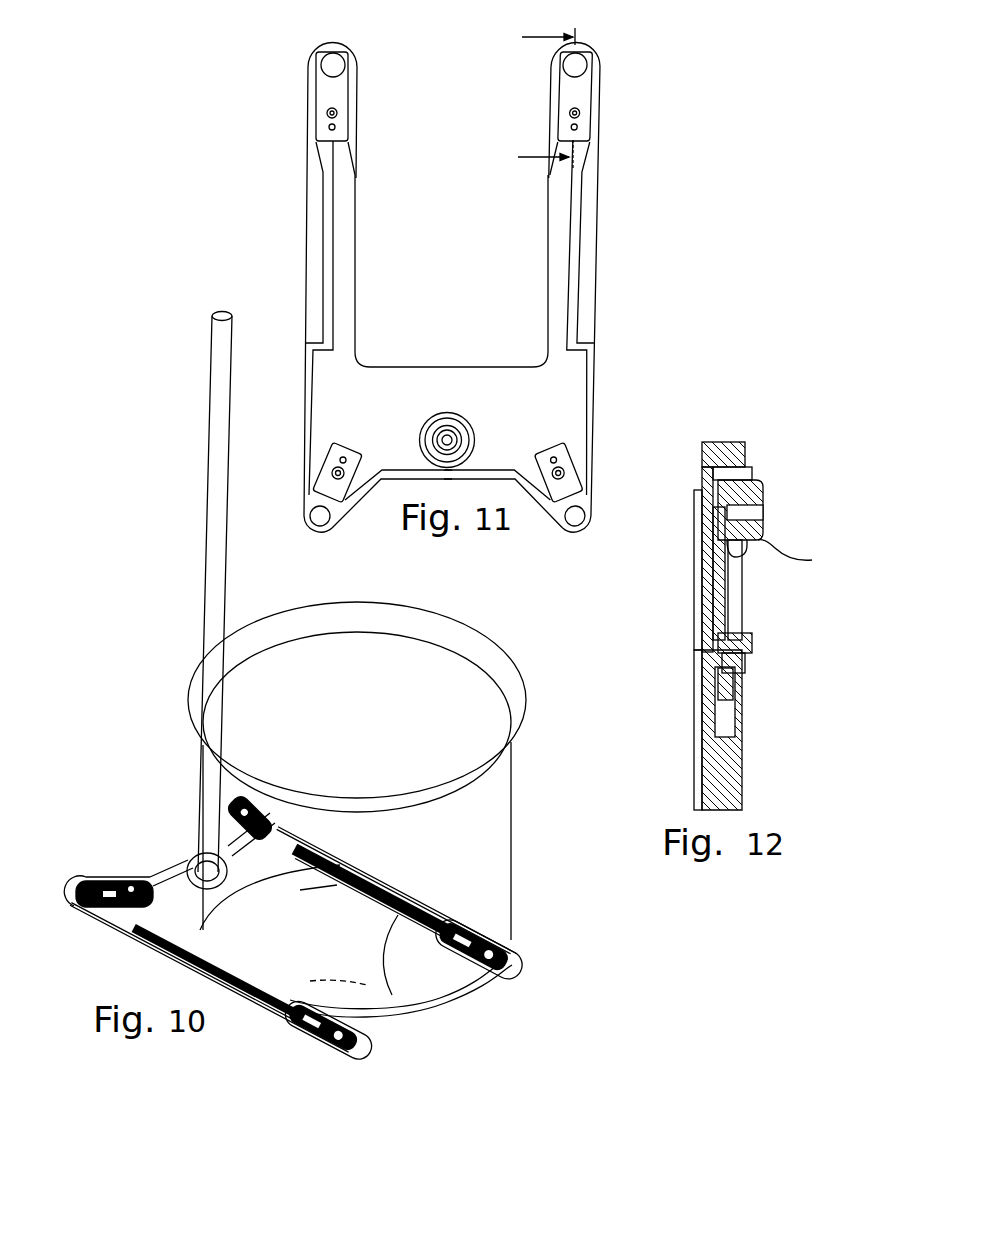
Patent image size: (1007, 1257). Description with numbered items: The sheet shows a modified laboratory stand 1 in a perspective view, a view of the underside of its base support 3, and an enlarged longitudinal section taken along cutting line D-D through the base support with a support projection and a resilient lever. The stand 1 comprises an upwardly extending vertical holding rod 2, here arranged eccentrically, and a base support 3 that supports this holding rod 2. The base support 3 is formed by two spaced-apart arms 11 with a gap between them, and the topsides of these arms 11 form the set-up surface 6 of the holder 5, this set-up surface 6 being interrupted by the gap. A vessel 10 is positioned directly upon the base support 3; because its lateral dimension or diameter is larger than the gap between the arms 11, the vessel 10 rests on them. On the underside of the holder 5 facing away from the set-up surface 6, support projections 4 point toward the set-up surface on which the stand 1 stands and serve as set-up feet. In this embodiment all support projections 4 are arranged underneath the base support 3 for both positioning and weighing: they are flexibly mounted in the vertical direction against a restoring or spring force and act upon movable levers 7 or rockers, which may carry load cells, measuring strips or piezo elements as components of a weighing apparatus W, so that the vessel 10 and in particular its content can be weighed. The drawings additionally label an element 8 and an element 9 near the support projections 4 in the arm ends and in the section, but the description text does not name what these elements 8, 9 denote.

In FIG. 11, the laboratory stand 1 is at (608, 270).
In FIG. 10, the laboratory stand 1 is at (180, 615).
In FIG. 11, the holding rod 2 is at (458, 438).
In FIG. 10, the holding rod 2 is at (218, 518).
In FIG. 11, the base support 3 is at (305, 214).
In FIG. 12, the base support 3 is at (748, 445).
In FIG. 10, the base support 3 is at (145, 952).
In FIG. 11, the support projection 4 is at (333, 62).
In FIG. 12, the support projection 4 is at (760, 497).
In FIG. 10, the support projection 4 is at (66, 905).
In FIG. 11, the holder 5 is at (343, 243).
In FIG. 12, the holder 5 is at (700, 530).
In FIG. 10, the holder 5 is at (400, 1002).
In FIG. 12, the set-up surface 6 is at (698, 628).
In FIG. 12, the lever 7 is at (707, 575).
In FIG. 11, the clamp block / bolt 8 is at (578, 100).
In FIG. 12, the clamp block / bolt 8 is at (735, 590).
In FIG. 11, the screw 9 is at (577, 117).
In FIG. 10, the vessel 10 is at (512, 790).
In FIG. 11, the arm 11 is at (338, 290).
In FIG. 10, the arm 11 is at (298, 1040).
In FIG. 11, the cutting line D- D is at (541, 103).
In FIG. 12, the weighing apparatus W is at (800, 561).